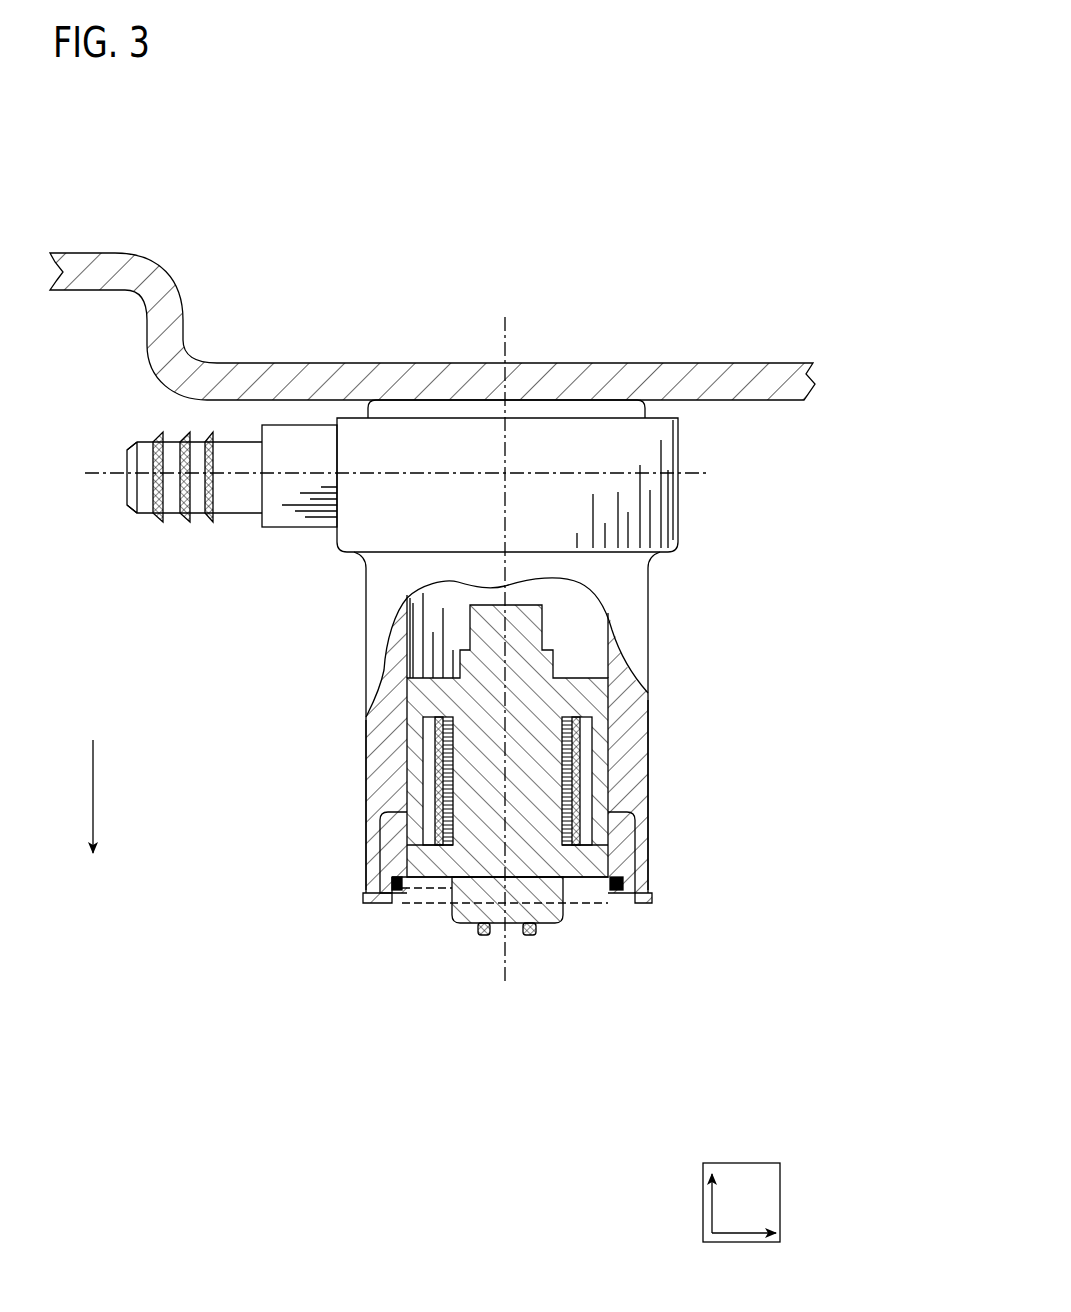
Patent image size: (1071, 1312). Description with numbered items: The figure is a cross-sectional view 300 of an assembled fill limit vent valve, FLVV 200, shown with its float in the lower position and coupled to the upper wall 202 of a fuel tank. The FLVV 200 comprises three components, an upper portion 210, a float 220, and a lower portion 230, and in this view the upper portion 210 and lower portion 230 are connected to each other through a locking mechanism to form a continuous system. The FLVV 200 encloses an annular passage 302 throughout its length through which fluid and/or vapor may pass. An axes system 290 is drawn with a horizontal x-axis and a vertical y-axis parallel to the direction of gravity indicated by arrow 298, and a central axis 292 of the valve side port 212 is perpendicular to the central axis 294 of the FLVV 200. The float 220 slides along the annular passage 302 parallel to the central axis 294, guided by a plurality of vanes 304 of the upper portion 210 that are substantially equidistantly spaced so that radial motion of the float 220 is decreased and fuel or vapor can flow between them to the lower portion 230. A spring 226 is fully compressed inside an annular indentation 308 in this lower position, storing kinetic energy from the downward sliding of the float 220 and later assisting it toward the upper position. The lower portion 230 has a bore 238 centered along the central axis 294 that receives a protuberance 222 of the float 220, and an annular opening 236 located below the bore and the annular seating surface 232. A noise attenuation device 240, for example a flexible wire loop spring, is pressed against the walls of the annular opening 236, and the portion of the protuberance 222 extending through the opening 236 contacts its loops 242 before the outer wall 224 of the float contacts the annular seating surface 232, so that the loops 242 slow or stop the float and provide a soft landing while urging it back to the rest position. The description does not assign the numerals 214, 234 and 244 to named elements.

The cross-sectional view 300 is at (745, 70).
The FLVV 200 is at (635, 237).
The upper wall 202 is at (715, 365).
The central axis 294 is at (505, 335).
The central axis 292 is at (102, 477).
The barbed fitting 214 is at (128, 450).
The valve side port 212 is at (176, 556).
The upper portion 210 is at (736, 530).
The arrow 298 is at (93, 788).
The outer wall 224 is at (603, 780).
The vanes 304 is at (377, 740).
The float 220 is at (566, 626).
The annular passage 302 is at (460, 601).
The spring 226 is at (437, 803).
The annular indentation 308 is at (585, 740).
The bore 238 is at (492, 877).
The annular seating surface 232 is at (593, 850).
The flange foot 234 is at (385, 900).
The protuberance 222 is at (540, 922).
The pins 244 is at (532, 935).
The lower portion 230 is at (669, 905).
The annular opening 236 is at (614, 905).
The loops 242 is at (452, 903).
The noise attenuation device 240 is at (423, 943).
The axes system 290 is at (733, 1163).